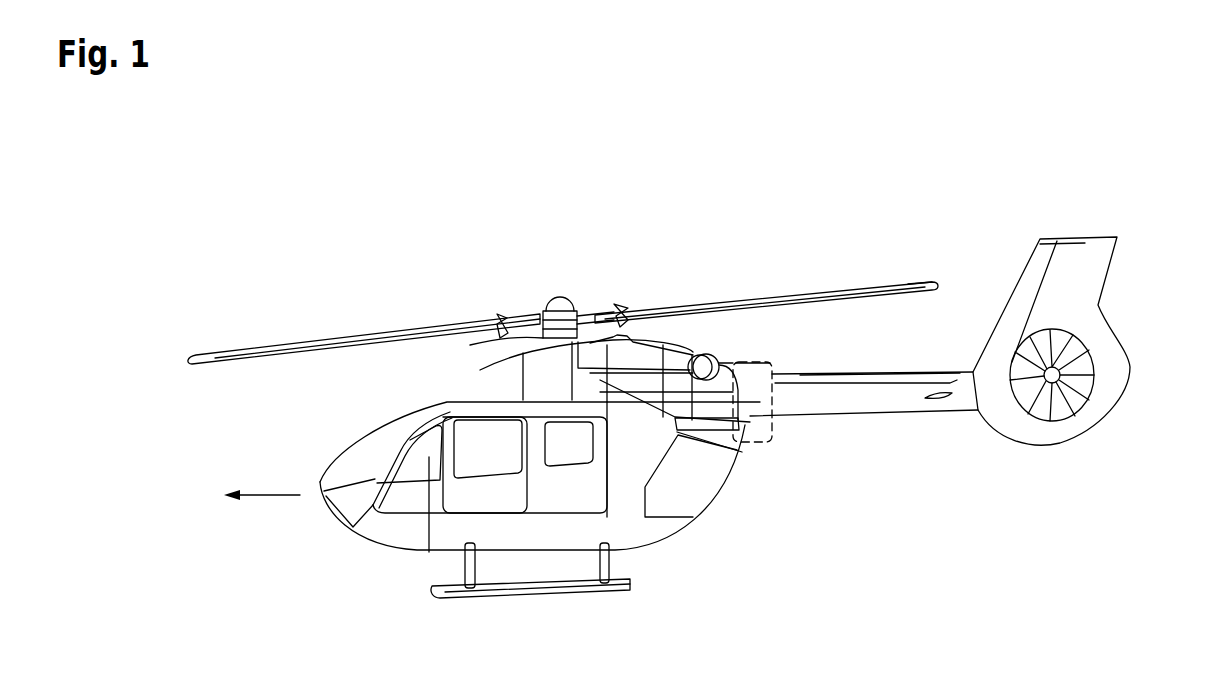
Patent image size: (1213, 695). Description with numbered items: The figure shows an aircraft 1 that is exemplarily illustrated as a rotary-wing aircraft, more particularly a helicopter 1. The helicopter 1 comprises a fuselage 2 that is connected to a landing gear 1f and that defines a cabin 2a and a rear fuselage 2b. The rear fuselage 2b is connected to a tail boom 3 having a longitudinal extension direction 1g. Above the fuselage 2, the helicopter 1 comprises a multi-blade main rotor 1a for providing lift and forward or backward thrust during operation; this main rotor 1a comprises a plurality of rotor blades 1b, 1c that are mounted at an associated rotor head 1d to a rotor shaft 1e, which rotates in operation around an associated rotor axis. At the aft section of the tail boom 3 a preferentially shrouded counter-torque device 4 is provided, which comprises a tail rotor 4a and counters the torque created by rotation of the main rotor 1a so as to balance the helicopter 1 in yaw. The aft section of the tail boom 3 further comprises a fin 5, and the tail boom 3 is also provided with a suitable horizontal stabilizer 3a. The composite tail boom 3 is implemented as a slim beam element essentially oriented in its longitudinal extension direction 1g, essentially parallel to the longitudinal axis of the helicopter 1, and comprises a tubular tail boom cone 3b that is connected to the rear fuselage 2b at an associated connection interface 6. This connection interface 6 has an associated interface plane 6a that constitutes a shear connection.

The aircraft 1 is at (320, 209).
The multi-blade main rotor 1a is at (928, 265).
The rotor blade 1b is at (244, 352).
The rotor blade 1c is at (897, 292).
The rotor head 1d is at (590, 293).
The rotor shaft 1e is at (470, 345).
The landing gear 1f is at (570, 592).
The longitudinal extension direction 1g is at (268, 500).
The fuselage 2 is at (660, 530).
The cabin 2a is at (398, 447).
The rear fuselage 2b is at (750, 464).
The tail boom 3 is at (893, 406).
The horizontal stabilizer 3a is at (940, 402).
The tubular tail boom cone 3b is at (815, 362).
The counter-torque device 4 is at (1112, 362).
The tail rotor 4a is at (1058, 418).
The fin 5 is at (1083, 261).
The connection interface 6 is at (772, 440).
The interface plane 6a is at (748, 347).